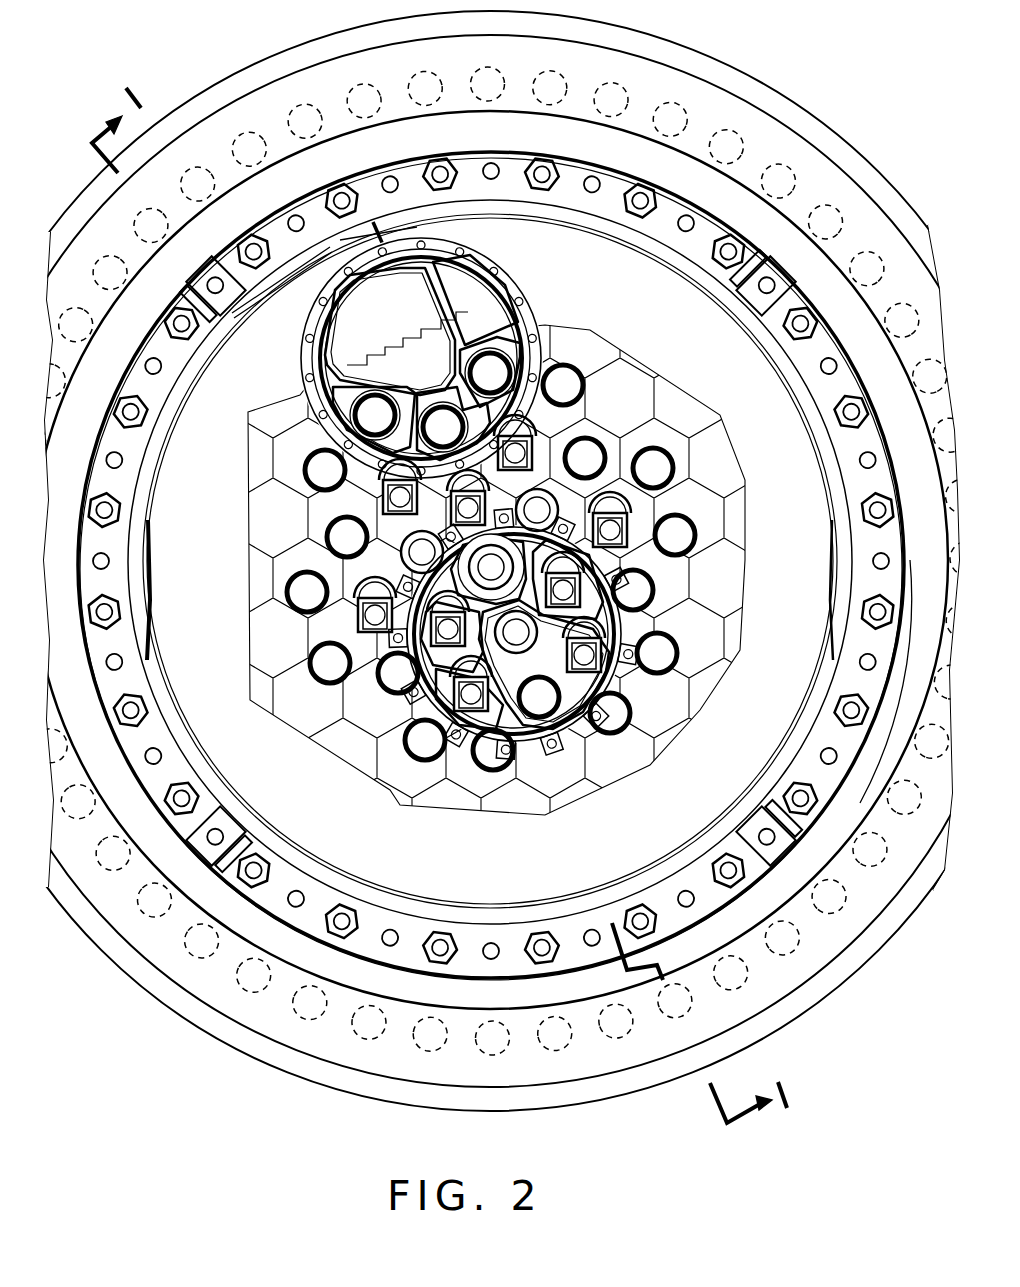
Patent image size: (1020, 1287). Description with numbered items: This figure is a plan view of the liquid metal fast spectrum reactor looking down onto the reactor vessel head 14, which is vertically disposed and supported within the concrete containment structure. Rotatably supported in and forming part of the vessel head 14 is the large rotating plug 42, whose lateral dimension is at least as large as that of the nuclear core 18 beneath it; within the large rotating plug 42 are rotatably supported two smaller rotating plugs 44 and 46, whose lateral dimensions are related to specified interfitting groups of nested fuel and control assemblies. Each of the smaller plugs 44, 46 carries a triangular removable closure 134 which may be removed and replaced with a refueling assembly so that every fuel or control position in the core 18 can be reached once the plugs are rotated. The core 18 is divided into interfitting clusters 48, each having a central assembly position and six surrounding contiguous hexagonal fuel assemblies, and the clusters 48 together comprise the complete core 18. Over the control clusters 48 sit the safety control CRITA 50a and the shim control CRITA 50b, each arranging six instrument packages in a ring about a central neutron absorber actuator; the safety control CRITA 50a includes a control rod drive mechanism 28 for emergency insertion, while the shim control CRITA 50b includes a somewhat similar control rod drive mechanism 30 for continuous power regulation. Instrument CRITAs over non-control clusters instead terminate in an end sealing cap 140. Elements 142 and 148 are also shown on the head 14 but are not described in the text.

The reactor vessel head 14 is at (707, 66).
The nuclear core 18 is at (622, 384).
The control rod drive mechanism 28 is at (540, 470).
The control rod drive mechanism 30 is at (633, 634).
The large rotating plug 42 is at (206, 432).
The small rotating plug 44 is at (570, 737).
The small rotating plug 46 is at (492, 293).
The cluster 48 is at (680, 472).
The safety control CRITA 50a is at (566, 498).
The shim control CRITA 50b is at (346, 617).
The removable closure 134 is at (440, 265).
The end sealing cap 140 is at (553, 366).
The bolt 142 is at (546, 166).
The clamp 148 is at (763, 318).